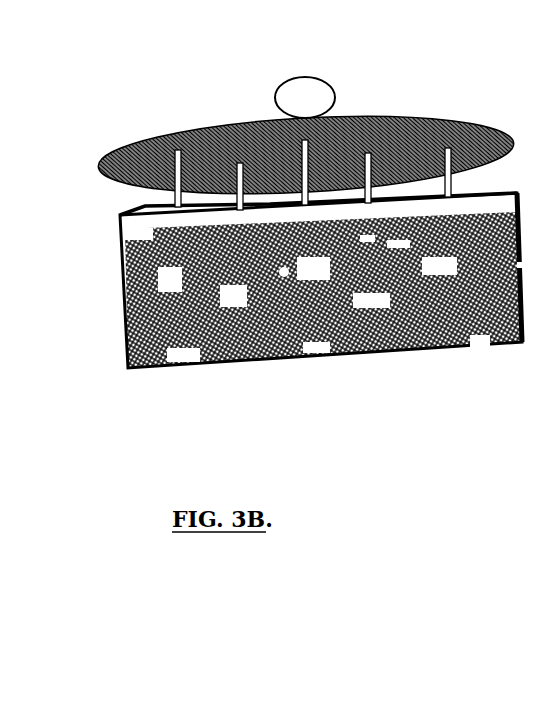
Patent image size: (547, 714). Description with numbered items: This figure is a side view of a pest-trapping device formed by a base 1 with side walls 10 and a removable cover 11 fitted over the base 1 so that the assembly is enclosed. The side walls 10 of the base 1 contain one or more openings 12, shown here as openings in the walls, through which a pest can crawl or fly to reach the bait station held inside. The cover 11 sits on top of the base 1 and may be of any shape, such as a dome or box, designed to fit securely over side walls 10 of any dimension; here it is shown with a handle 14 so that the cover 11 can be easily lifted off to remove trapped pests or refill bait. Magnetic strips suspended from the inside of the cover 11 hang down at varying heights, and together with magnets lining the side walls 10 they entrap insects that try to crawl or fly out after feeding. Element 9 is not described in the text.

The base 1 is at (277, 245).
The connector pins 9 is at (225, 208).
The side walls 10 is at (120, 310).
The removable cover 11 is at (243, 118).
The openings 12 is at (323, 280).
The handle 14 is at (338, 90).